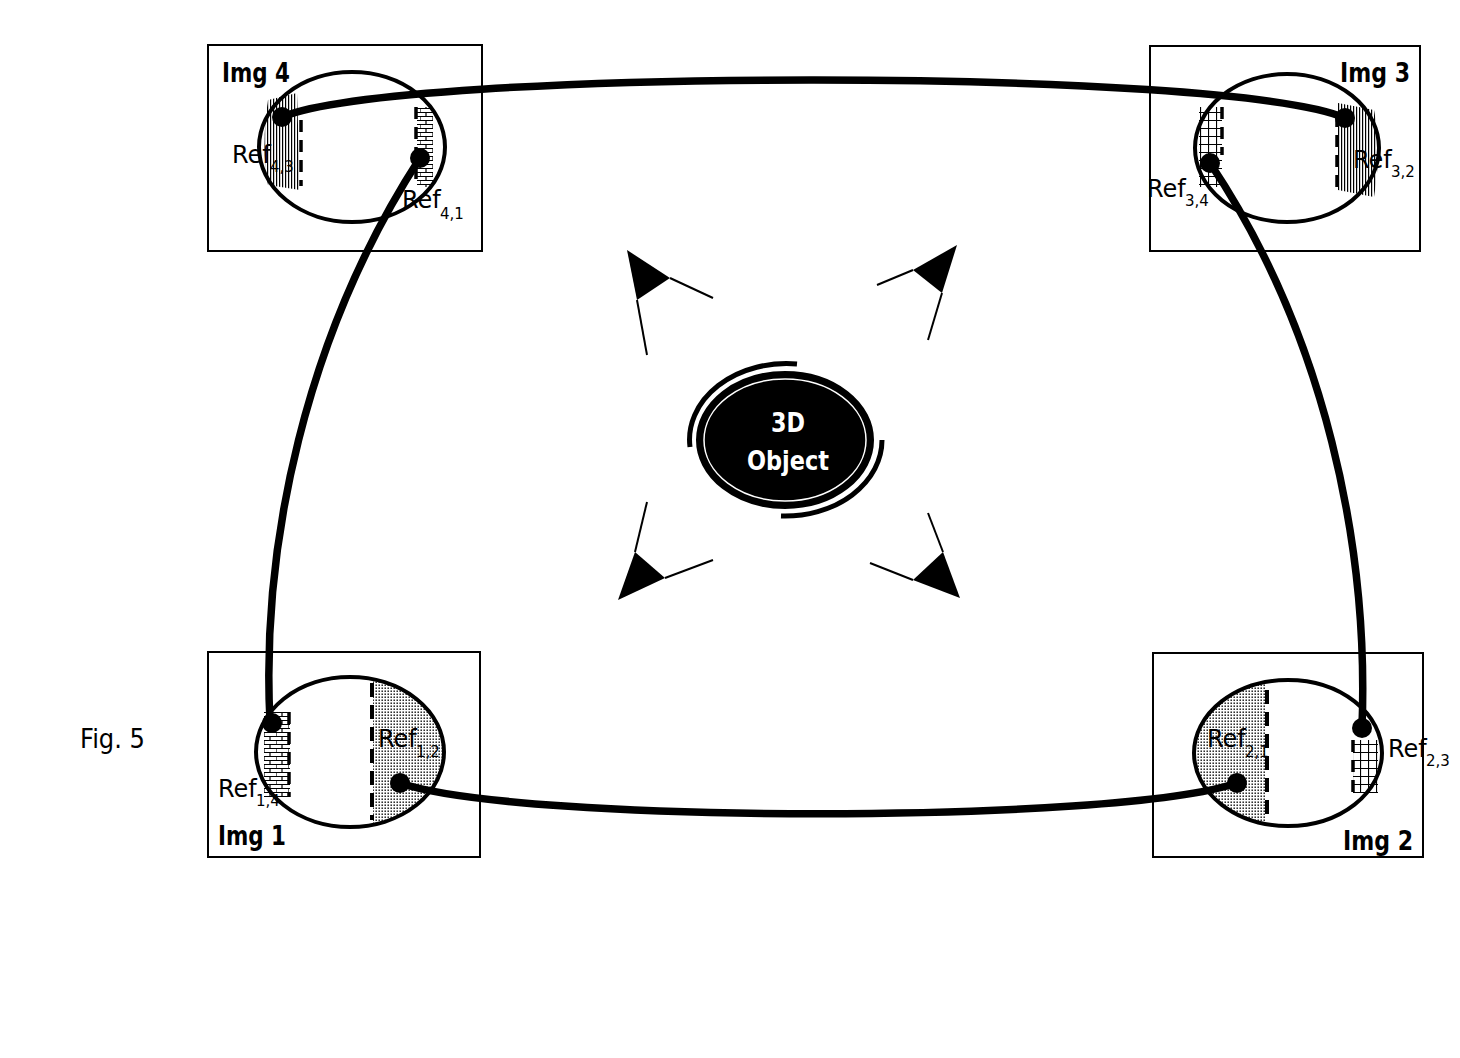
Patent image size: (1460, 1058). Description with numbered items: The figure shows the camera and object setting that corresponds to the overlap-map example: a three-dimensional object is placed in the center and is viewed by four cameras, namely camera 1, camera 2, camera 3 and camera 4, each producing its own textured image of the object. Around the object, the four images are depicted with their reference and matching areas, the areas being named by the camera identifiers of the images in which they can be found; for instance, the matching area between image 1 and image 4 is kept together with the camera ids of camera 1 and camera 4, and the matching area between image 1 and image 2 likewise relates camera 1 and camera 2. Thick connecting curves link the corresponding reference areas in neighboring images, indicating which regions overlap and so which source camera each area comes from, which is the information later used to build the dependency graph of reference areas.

The camera 1 is at (625, 552).
The camera 2 is at (966, 558).
The camera 3 is at (970, 292).
The camera 4 is at (624, 302).